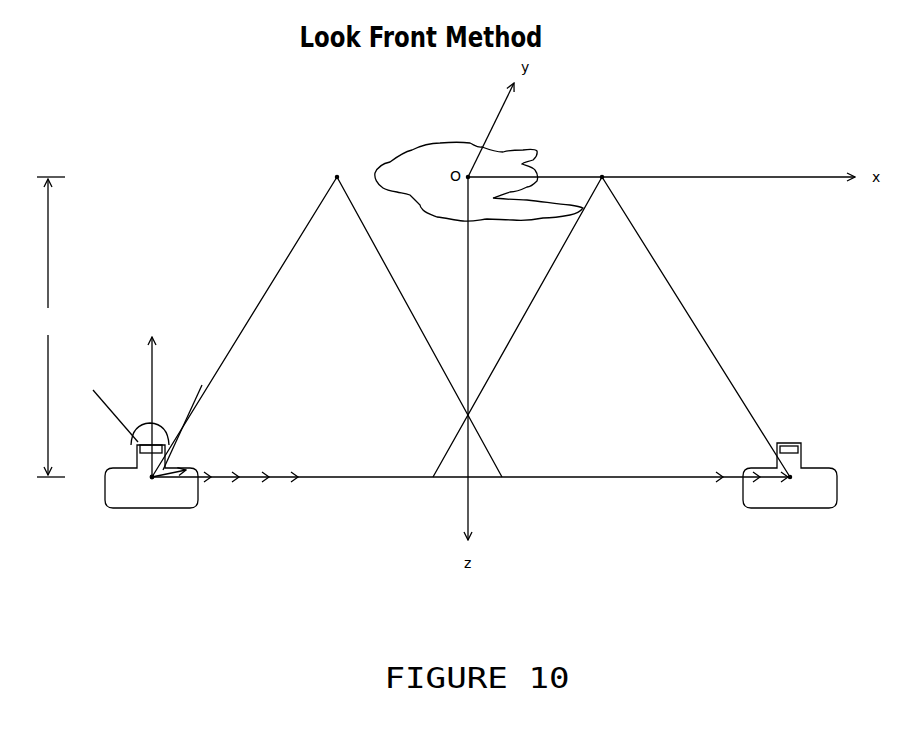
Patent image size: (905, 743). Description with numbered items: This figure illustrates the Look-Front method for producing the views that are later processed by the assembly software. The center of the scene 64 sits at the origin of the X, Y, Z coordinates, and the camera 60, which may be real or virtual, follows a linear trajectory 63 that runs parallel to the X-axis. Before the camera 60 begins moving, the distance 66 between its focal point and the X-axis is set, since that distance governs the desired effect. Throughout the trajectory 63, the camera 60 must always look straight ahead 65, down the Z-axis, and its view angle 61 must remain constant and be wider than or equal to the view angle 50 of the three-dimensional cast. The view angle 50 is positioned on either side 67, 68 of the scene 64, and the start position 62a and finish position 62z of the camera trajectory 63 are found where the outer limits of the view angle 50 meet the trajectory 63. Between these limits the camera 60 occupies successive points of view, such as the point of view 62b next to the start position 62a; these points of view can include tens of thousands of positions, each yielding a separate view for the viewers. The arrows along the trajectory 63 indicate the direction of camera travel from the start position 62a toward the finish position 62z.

The view angle of the 3-D cast 50 is at (320, 200).
The camera 60 is at (111, 510).
The view angle of the camera 61 is at (147, 427).
The start position 62a is at (148, 485).
The point of view 62b is at (173, 482).
The finish position 62z is at (790, 475).
The trajectory 63 is at (611, 482).
The scene 64 is at (536, 138).
The straight-ahead direction 65 is at (151, 395).
The distance 66 is at (51, 327).
The first side of the scene 67 is at (341, 171).
The second side of the scene 68 is at (606, 171).